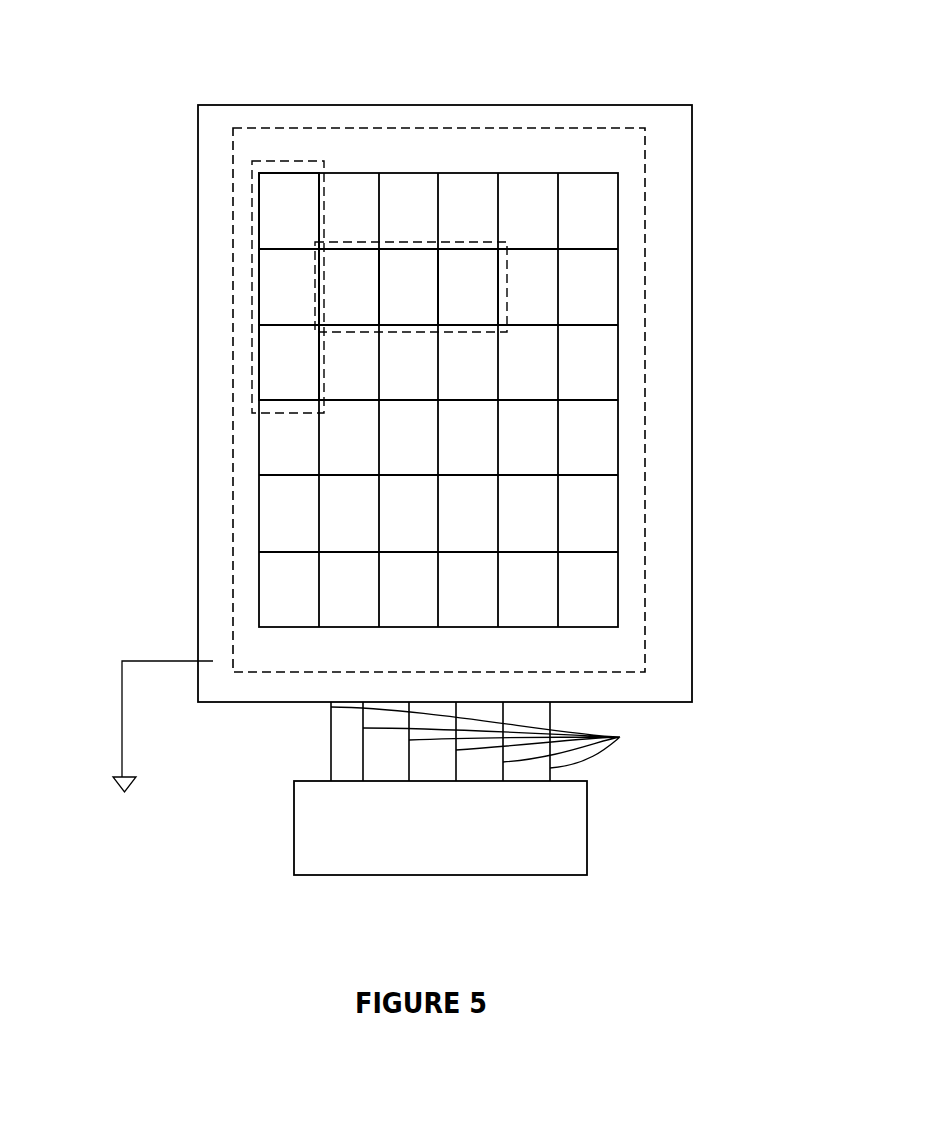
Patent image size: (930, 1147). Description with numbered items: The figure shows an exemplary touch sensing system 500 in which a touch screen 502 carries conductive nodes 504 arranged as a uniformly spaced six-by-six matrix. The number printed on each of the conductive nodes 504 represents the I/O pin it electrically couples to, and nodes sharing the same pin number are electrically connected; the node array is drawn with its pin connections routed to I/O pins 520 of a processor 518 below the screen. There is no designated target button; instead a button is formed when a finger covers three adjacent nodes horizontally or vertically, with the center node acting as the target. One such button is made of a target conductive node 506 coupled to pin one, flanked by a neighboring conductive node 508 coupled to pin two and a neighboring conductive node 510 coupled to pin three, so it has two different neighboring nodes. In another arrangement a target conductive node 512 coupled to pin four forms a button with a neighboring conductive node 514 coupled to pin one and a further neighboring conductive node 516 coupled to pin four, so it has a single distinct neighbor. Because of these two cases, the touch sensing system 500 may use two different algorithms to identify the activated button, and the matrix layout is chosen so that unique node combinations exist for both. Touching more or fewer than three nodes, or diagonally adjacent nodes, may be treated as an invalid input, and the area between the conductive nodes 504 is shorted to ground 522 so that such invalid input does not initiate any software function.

The touch sensing system 500 is at (416, 485).
The touch screen 502 is at (665, 345).
The conductive nodes 504 is at (647, 595).
The target conductive node 506 is at (410, 268).
The neighboring conductive node 508 is at (352, 267).
The neighboring conductive node 510 is at (468, 268).
The target conductive node 512 is at (272, 280).
The neighboring conductive node 514 is at (278, 221).
The neighboring conductive nodes 516 is at (282, 362).
The processor 518 is at (530, 836).
The I/O pins 520 is at (539, 741).
The ground 522 is at (148, 745).